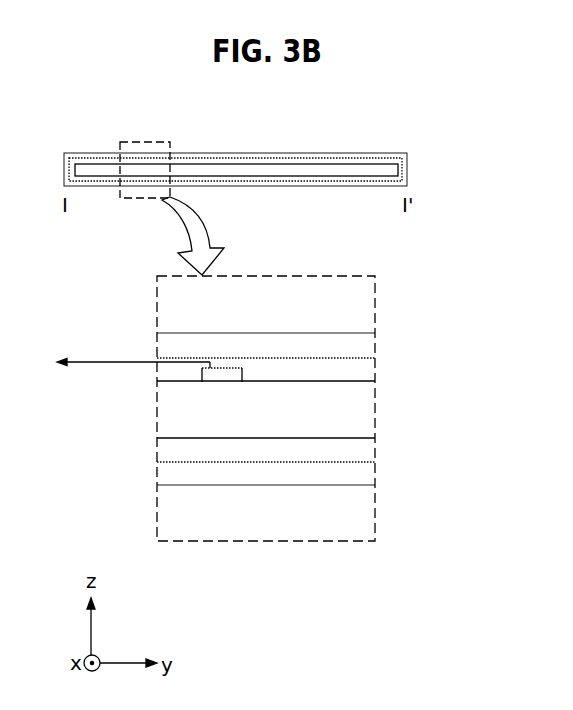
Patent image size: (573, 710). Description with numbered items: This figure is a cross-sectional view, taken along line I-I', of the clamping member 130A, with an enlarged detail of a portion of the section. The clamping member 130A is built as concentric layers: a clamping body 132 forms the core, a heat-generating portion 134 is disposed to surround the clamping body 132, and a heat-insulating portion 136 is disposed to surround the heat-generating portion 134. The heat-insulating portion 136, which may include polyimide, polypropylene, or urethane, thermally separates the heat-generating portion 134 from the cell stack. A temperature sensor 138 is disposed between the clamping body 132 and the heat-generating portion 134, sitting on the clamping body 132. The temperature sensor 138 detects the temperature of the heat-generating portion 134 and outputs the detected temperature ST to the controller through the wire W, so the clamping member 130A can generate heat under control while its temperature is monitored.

The clamping member 130A is at (505, 418).
The clamping body 132 is at (243, 168).
The heat-generating portion 134 is at (402, 155).
The heat-insulating portion 136 is at (410, 168).
The temperature sensor 138 is at (213, 372).
The detected temperature ST is at (121, 361).
The wire W is at (110, 360).